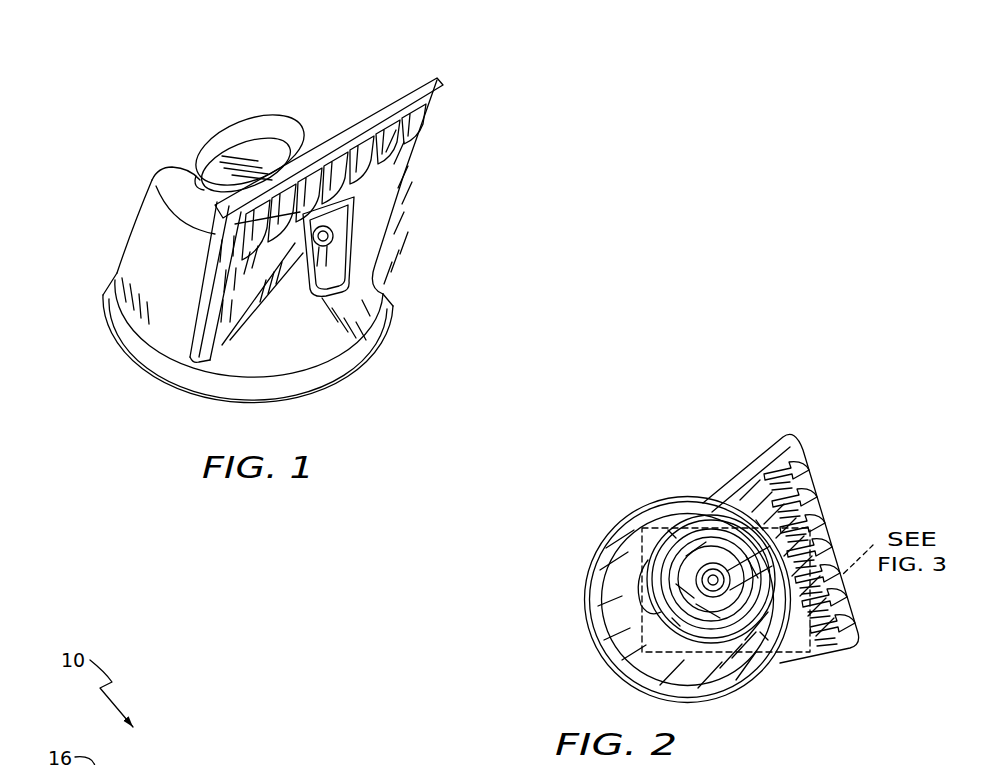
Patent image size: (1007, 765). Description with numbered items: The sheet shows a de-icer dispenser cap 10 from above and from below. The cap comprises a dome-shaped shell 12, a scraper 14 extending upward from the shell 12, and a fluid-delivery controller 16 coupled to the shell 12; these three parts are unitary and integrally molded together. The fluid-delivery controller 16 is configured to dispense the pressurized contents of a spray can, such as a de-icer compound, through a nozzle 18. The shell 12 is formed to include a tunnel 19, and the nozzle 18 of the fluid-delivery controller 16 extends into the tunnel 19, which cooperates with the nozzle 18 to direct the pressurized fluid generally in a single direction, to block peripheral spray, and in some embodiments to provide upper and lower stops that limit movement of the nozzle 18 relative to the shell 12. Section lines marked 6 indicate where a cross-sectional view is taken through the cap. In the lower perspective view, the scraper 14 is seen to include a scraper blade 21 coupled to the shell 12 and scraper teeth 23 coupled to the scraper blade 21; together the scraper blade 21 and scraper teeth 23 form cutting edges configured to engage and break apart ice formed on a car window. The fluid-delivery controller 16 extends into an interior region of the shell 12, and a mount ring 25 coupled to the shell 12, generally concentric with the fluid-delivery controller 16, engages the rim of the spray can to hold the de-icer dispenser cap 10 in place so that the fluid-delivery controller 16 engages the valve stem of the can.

In FIG. 1, the de-icer dispenser cap 10 is at (103, 56).
In FIG. 2, the de-icer dispenser cap 10 is at (861, 231).
In FIG. 1, the section view indicator 6 is at (38, 239).
In FIG. 1, the shell 12 is at (156, 403).
In FIG. 2, the shell 12 is at (535, 643).
In FIG. 1, the scraper 14 is at (481, 110).
In FIG. 2, the scraper 14 is at (853, 324).
In FIG. 1, the fluid-delivery controller 16 is at (175, 90).
In FIG. 2, the fluid-delivery controller 16 is at (718, 411).
In FIG. 1, the nozzle 18 is at (437, 200).
In FIG. 2, the nozzle 18 is at (765, 728).
In FIG. 1, the tunnel 19 is at (423, 272).
In FIG. 2, the tunnel 19 is at (822, 522).
In FIG. 2, the scraper blade 21 is at (707, 320).
In FIG. 2, the scraper teeth 23 is at (887, 372).
In FIG. 2, the mount ring 25 is at (507, 535).